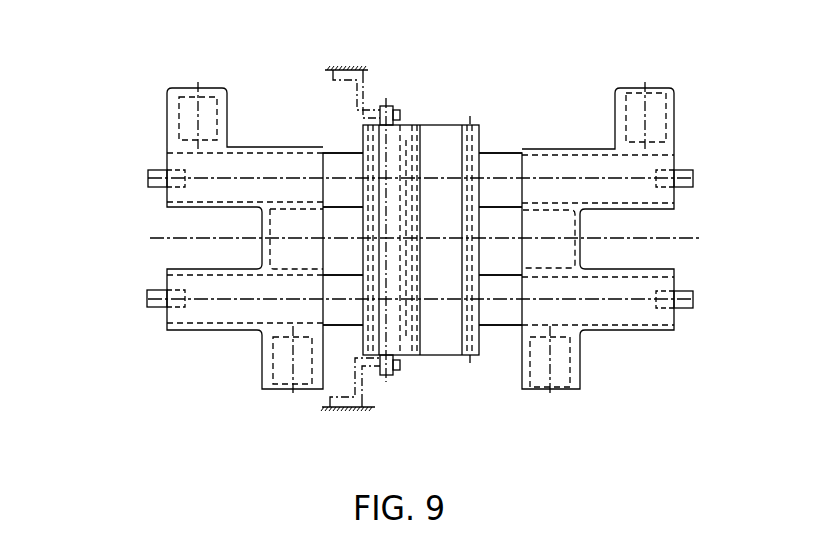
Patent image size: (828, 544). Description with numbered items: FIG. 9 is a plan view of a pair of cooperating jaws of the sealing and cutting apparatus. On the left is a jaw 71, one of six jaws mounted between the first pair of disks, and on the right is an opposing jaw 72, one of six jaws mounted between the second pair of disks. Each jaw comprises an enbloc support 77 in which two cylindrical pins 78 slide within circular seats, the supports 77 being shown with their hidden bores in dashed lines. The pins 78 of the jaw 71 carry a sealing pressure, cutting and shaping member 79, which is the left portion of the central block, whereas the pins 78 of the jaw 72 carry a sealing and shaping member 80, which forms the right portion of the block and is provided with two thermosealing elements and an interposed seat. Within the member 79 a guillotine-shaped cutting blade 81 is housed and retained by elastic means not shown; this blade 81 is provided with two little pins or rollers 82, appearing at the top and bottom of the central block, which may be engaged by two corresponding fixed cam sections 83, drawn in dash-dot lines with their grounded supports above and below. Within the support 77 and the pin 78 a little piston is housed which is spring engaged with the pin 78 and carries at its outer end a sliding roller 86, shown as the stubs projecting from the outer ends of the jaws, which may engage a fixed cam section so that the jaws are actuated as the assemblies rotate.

The jaw 71 is at (283, 146).
The jaw 72 is at (533, 148).
The enbloc support 77 is at (206, 197).
The cylindrical pin 78 is at (340, 160).
The sealing pressure, cutting and shaping member 79 is at (408, 356).
The sealing and shaping member 80 is at (443, 345).
The guillotine-shaped cutting blade 81 is at (403, 205).
The little pin or roller 82 is at (387, 105).
The fixed cam section 83 is at (357, 89).
The sliding roller 86 is at (148, 173).